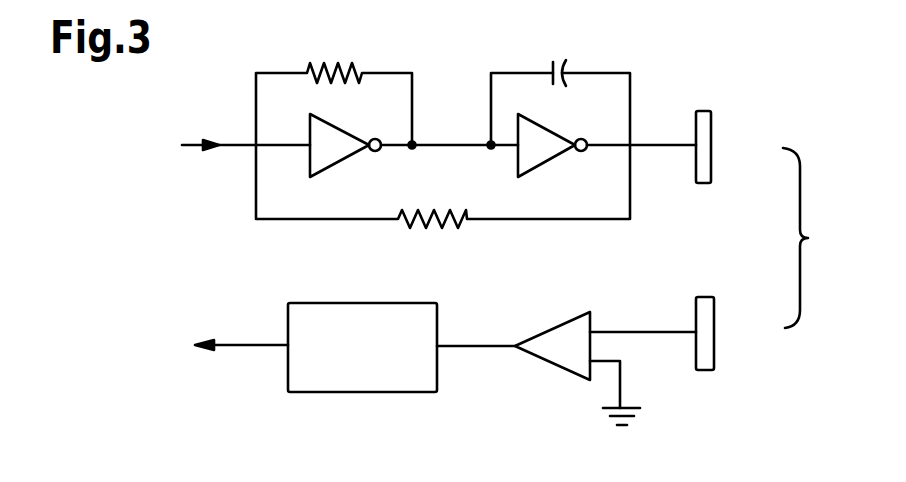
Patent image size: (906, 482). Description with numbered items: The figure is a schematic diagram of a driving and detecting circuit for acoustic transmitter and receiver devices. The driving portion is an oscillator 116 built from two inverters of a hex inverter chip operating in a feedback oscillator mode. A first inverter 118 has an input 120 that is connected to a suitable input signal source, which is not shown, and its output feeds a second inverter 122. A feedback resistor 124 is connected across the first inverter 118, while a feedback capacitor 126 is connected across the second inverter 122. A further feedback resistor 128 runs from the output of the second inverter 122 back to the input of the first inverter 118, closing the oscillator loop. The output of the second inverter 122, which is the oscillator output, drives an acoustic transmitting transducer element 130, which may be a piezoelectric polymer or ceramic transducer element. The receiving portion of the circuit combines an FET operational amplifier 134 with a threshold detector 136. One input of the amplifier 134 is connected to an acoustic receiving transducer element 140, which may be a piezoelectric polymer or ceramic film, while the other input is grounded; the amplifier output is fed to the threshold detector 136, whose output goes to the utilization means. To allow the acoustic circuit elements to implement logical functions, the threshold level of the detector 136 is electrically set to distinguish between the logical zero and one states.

The oscillator 116 is at (445, 60).
The first inverter 118 is at (340, 163).
The input 120 is at (218, 147).
The second inverter 122 is at (551, 165).
The feedback resistor 124 is at (337, 62).
The feedback capacitor 126 is at (567, 68).
The feedback resistor 128 is at (452, 221).
The acoustic transmitting transducer element 130 is at (712, 121).
The FET operational amplifier 134 is at (531, 358).
The threshold detector 136 is at (355, 393).
The acoustic receiving transducer element 140 is at (716, 350).